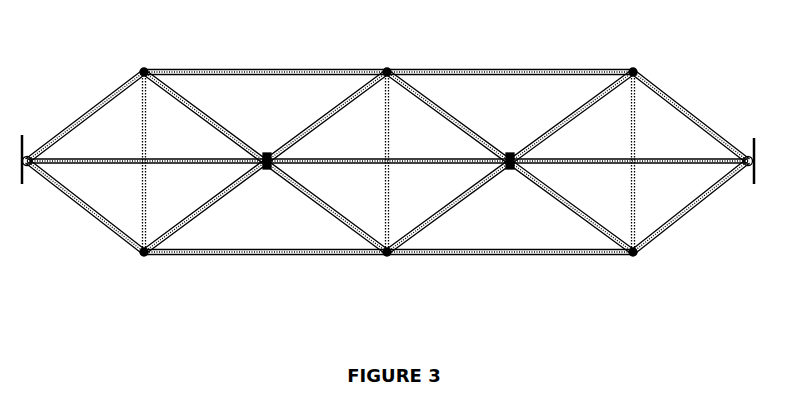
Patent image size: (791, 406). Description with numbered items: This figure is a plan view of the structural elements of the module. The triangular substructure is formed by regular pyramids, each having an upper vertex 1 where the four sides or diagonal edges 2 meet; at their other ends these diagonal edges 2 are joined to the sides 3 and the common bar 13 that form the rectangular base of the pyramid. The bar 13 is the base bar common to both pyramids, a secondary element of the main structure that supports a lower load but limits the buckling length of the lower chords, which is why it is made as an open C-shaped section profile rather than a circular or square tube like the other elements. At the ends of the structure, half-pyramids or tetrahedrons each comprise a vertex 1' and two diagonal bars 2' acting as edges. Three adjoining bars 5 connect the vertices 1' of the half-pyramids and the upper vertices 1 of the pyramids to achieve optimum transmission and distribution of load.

The upper vertex 1 is at (385, 127).
The vertex 1' is at (390, 134).
The diagonal edges 2 is at (389, 162).
The diagonal bars 2' is at (388, 162).
The sides 3 is at (273, 67).
The adjoining bars 5 is at (120, 158).
The bar of the base common to both pyramids 13 is at (390, 187).